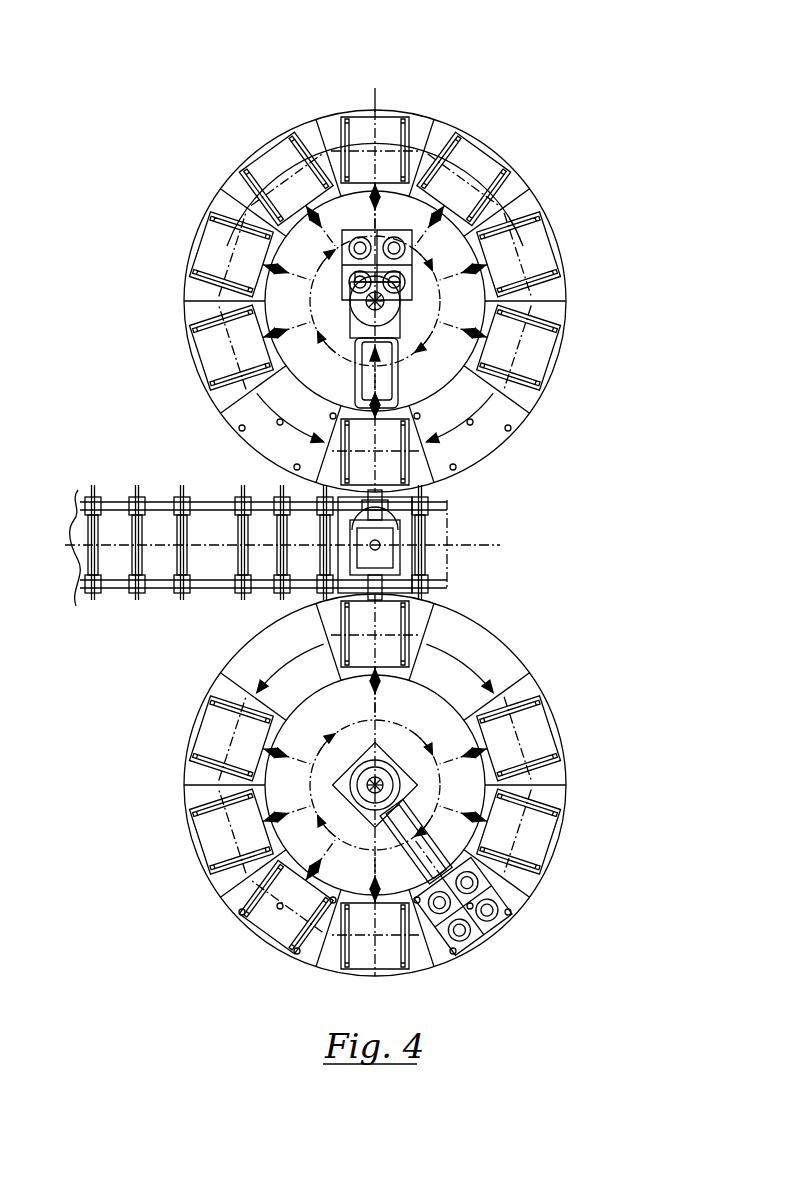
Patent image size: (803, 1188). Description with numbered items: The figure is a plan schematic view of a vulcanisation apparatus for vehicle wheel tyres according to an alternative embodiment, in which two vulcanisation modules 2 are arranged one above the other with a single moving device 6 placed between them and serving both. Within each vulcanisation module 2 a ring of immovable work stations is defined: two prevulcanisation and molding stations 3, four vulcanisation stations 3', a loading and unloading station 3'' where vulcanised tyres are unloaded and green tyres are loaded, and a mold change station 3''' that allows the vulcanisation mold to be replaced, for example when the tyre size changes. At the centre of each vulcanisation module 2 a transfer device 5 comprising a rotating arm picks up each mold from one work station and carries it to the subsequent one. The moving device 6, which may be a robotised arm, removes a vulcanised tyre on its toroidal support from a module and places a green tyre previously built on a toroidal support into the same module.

The vulcanisation module 2 is at (630, 106).
The prevulcanisation and molding station 3 is at (372, 543).
The vulcanisation station 3' is at (375, 537).
The loading and unloading station 3'' is at (431, 543).
The mold change station 3''' is at (363, 524).
The transfer device 5 is at (545, 335).
The moving device 6 is at (400, 538).